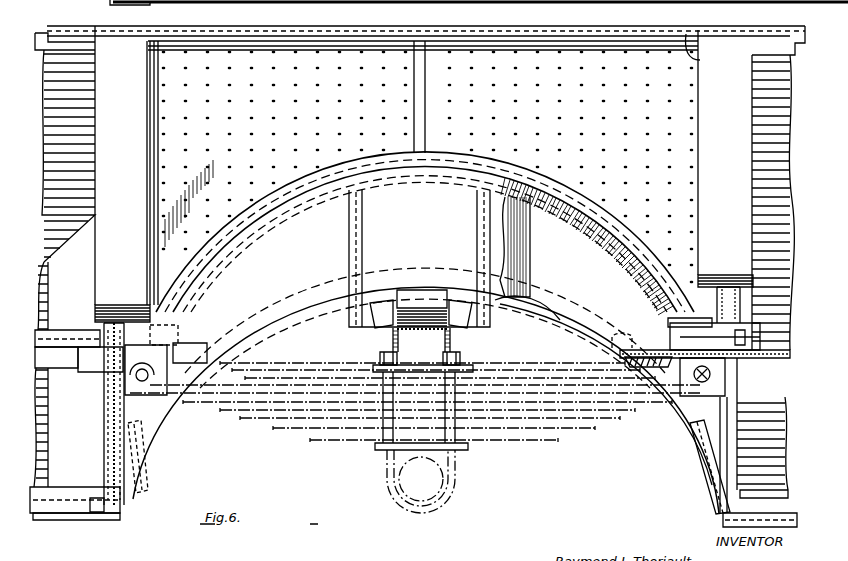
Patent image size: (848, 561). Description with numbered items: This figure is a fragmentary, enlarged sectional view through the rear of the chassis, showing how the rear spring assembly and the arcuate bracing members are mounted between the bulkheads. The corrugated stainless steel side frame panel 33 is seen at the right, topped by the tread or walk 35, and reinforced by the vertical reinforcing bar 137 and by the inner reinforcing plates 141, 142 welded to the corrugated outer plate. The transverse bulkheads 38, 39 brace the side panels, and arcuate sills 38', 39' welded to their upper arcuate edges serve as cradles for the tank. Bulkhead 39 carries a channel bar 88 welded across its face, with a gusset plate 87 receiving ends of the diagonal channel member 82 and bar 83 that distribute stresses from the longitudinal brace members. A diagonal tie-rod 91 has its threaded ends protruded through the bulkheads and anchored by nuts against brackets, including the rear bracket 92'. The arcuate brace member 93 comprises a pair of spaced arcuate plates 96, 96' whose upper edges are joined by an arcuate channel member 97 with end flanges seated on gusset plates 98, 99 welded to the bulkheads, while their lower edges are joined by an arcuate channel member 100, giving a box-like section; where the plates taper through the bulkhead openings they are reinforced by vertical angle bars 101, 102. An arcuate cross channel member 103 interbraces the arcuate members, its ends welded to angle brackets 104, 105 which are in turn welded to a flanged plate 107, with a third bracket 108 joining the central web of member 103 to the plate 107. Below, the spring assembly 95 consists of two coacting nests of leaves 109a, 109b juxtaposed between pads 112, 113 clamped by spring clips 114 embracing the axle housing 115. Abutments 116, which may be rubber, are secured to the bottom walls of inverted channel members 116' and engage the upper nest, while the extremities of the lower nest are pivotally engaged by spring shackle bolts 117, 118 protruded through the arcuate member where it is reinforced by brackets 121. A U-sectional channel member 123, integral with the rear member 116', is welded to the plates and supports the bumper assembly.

The side frame panel 33 is at (782, 120).
The tread or walk 35 is at (46, 33).
The bulkhead 38 is at (771, 34).
The arcuate sill 38' is at (686, 35).
The bulkhead 39 is at (144, 269).
The arcuate sill 39' is at (66, 190).
The diagonally-stretching channel member 82 is at (62, 332).
The diagonally-stretching bar 83 is at (70, 376).
The gusset plate 87 is at (108, 328).
The channel bar 88 is at (125, 370).
The tie-rod 91 is at (678, 341).
The bracket 92' is at (765, 316).
The arcuate brace member 93 is at (527, 200).
The spring assembly 95 is at (604, 418).
The arcuate plate 96 is at (551, 247).
The arcuate plate 96' is at (322, 298).
The arcuate channel member 97 is at (247, 236).
The gusset plate 98 is at (670, 321).
The gusset plate 99 is at (198, 278).
The arcuate channel member 100 is at (290, 326).
The angle bar 101 is at (733, 461).
The angle bar 102 is at (93, 513).
The arcuate cross channel member 103 is at (455, 336).
The angle bracket 104 is at (383, 330).
The angle bracket 105 is at (478, 312).
The flanged plate 107 is at (380, 233).
The third bracket 108 is at (429, 291).
The spring nest 109a is at (327, 430).
The spring nest 109b is at (332, 368).
The plate or pad 112 is at (466, 451).
The plate or pad 113 is at (476, 367).
The spring clip 114 is at (458, 488).
The axle housing 115 is at (392, 476).
The abutment 116 is at (422, 346).
The inverted channel section member 116' is at (391, 328).
The spring shackle bolt 117 is at (110, 388).
The spring shackle bolt 118 is at (726, 388).
The bracket 121 is at (105, 410).
The U-sectional channel member 123 is at (790, 370).
The vertical reinforcing bar 137 is at (424, 60).
The inner reinforcing plate 141 is at (381, 55).
The inner reinforcing plate 142 is at (60, 512).